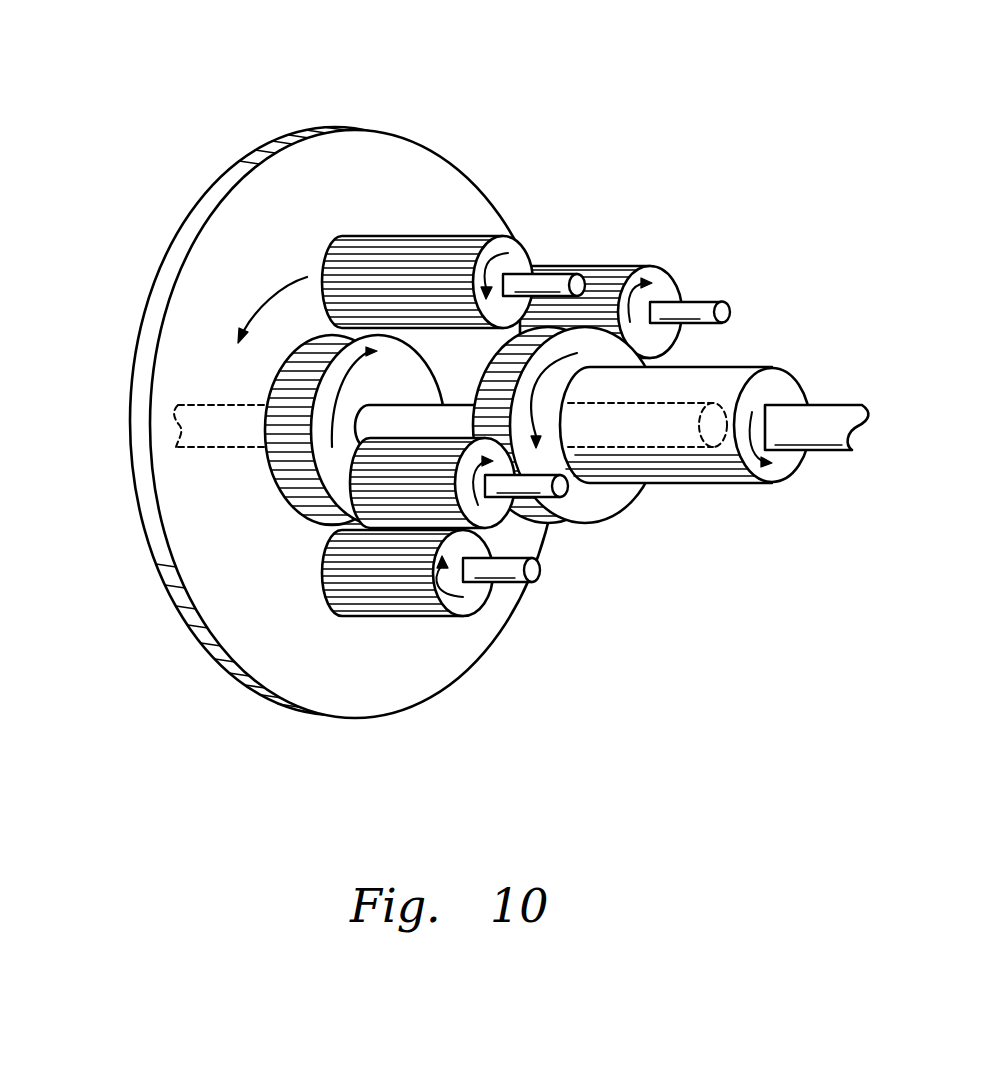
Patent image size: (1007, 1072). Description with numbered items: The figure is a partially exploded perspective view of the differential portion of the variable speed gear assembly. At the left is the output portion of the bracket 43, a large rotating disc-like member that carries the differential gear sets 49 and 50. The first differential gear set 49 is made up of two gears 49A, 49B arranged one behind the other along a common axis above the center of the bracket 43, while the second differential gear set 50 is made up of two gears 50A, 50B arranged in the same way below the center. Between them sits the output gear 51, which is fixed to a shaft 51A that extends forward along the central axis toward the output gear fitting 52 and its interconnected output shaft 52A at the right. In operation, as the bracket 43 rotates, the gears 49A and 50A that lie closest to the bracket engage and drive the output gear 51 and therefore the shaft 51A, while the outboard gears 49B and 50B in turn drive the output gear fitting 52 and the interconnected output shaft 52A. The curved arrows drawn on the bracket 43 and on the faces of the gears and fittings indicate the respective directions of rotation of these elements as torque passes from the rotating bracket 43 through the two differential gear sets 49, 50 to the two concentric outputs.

The bracket 43 is at (370, 152).
The differential gear set 49 is at (452, 212).
The gear 49A is at (380, 247).
The gear 49B is at (603, 264).
The differential gear set 50 is at (406, 648).
The gear 50A is at (355, 600).
The gear 50B is at (380, 500).
The output gear 51 is at (325, 480).
The shaft 51A is at (375, 427).
The output gear fitting 52 is at (727, 380).
The output shaft 52A is at (823, 420).